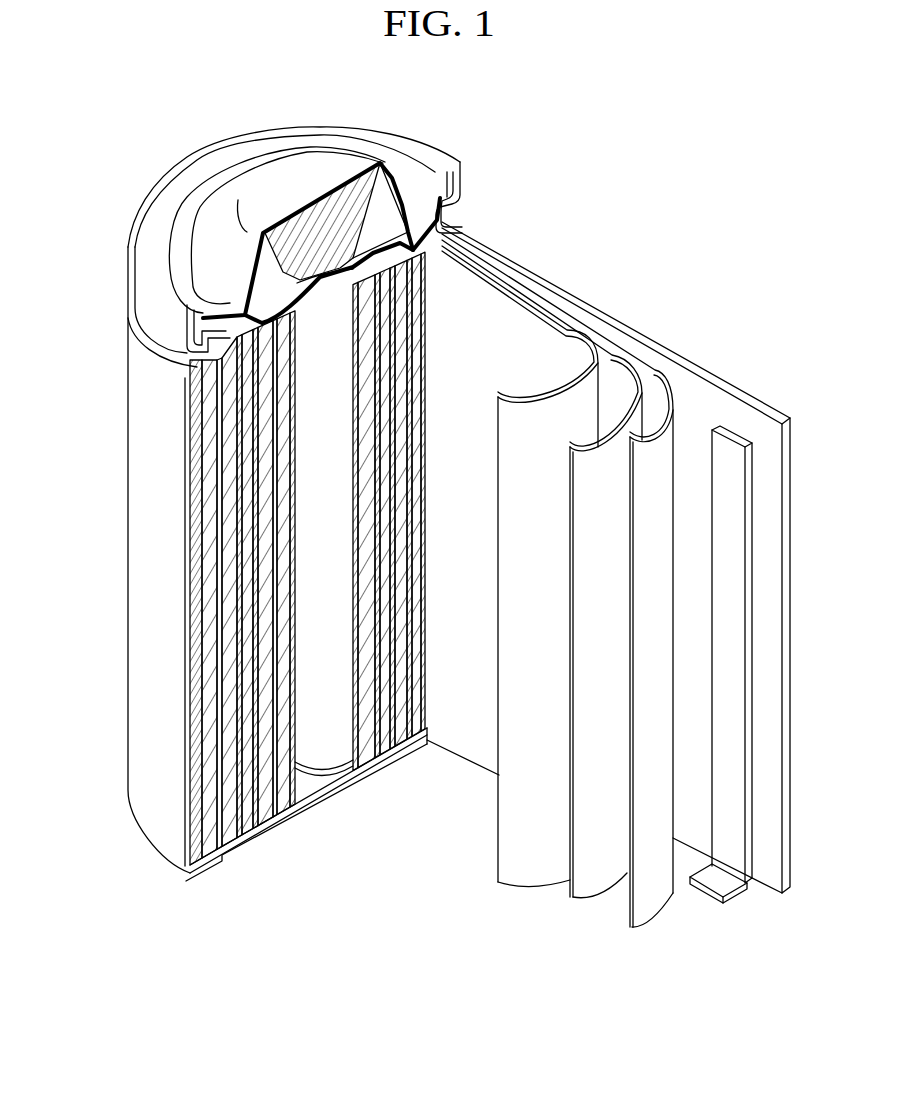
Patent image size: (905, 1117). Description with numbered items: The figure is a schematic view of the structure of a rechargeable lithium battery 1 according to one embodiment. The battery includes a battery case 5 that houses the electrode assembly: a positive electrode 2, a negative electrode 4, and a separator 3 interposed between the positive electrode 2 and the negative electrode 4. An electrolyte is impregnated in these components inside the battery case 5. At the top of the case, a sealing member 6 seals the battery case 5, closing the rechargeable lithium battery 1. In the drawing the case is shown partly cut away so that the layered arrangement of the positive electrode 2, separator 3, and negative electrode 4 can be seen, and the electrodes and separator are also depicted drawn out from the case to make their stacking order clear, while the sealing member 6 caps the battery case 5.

The rechargeable lithium battery 1 is at (499, 146).
The positive electrode 2 is at (724, 391).
The separator 3 is at (525, 298).
The negative electrode 4 is at (615, 378).
The battery case 5 is at (133, 512).
The sealing member 6 is at (302, 170).